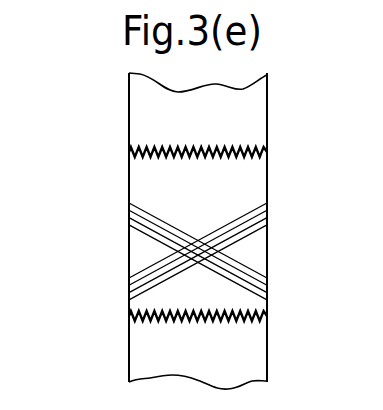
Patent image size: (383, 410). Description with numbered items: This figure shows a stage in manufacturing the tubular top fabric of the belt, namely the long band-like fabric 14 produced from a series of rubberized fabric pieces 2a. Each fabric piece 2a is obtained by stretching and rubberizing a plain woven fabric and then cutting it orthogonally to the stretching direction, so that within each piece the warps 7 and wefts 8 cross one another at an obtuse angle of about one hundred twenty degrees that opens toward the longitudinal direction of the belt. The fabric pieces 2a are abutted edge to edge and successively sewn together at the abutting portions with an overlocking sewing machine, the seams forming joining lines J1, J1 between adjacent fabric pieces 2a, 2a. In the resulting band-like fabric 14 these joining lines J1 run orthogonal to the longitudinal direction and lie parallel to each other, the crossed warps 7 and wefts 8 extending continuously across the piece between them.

The band-like fabric 14 is at (129, 115).
The fabric piece 2a is at (253, 118).
The joining line J1 is at (152, 322).
The warp 7 is at (143, 228).
The weft 8 is at (240, 230).